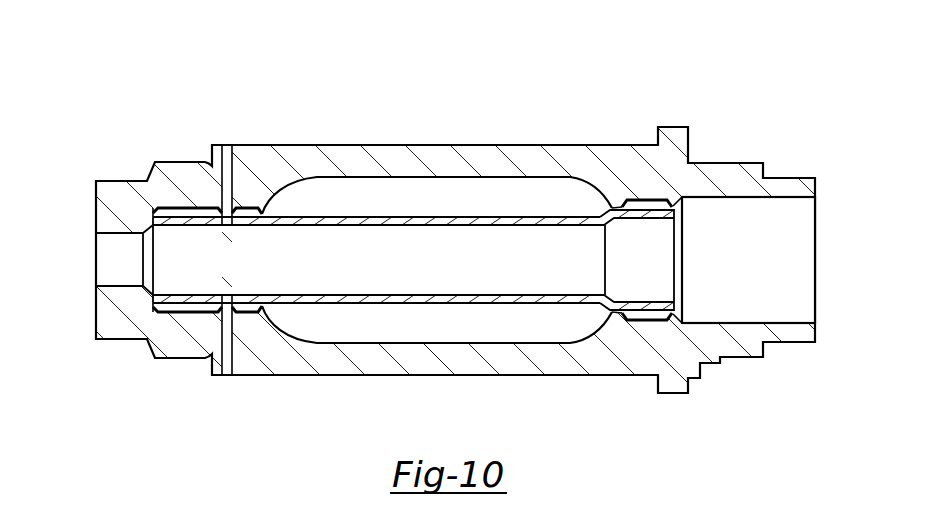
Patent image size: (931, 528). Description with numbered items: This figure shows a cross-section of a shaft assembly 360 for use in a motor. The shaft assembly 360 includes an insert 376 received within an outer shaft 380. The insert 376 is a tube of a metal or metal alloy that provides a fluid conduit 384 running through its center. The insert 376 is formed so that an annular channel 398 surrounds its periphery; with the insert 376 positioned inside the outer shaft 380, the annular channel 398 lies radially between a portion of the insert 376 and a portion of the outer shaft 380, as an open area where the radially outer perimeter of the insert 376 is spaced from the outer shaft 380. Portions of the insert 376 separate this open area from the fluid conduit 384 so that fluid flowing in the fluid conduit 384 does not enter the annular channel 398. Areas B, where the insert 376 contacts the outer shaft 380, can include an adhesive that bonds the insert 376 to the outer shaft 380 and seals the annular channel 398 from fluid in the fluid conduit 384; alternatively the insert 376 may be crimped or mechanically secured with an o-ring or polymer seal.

The shaft assembly 360 is at (712, 58).
The insert 376 is at (651, 300).
The outer shaft 380 is at (778, 188).
The fluid conduit 384 is at (175, 262).
The annular channel 398 is at (418, 318).
The areas B is at (193, 208).